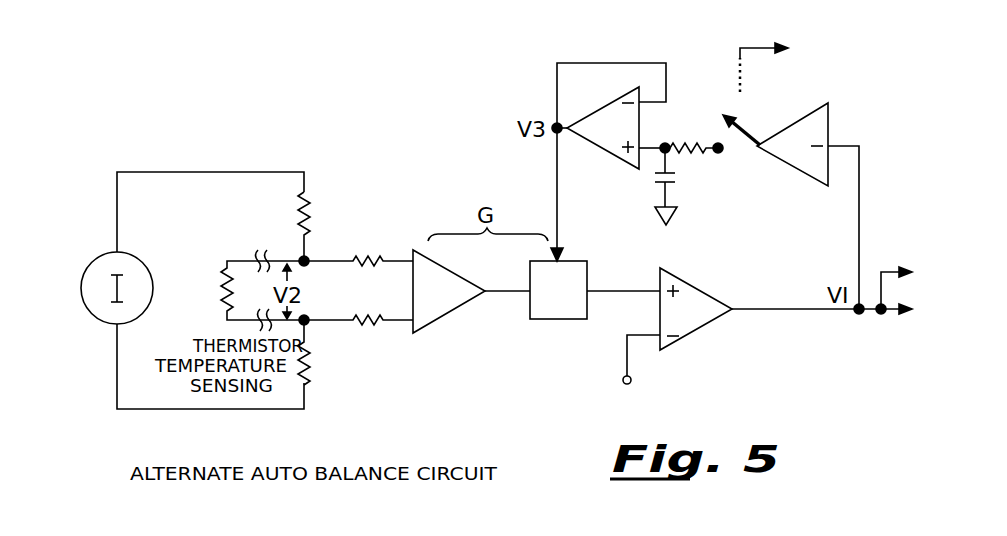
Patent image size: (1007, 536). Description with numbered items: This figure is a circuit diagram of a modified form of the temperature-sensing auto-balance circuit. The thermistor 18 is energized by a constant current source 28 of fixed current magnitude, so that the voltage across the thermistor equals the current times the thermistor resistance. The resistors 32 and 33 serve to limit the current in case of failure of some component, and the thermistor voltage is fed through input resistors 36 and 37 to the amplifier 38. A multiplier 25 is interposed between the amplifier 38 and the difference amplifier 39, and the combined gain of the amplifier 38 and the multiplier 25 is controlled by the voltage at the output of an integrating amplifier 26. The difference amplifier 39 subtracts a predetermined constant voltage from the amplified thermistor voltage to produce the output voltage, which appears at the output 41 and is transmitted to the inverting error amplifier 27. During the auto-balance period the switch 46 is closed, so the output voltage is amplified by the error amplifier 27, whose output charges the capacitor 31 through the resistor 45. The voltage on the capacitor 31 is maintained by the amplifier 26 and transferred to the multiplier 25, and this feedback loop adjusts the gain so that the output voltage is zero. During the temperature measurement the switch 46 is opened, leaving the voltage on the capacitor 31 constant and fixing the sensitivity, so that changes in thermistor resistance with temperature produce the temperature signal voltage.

The thermistor 18 is at (222, 279).
The multiplier 25 is at (582, 261).
The amplifier 26 is at (611, 116).
The inverting error amplifier 27 is at (805, 206).
The constant current source 28 is at (97, 263).
The capacitor 31 is at (668, 183).
The resistor 32 is at (310, 214).
The resistor 33 is at (306, 368).
The resistor 36 is at (383, 256).
The resistor 37 is at (383, 313).
The amplifier 38 is at (471, 291).
The difference amplifier 39 is at (764, 342).
The output terminal 41 is at (887, 262).
The resistor 45 is at (718, 154).
The switch 46 is at (736, 119).